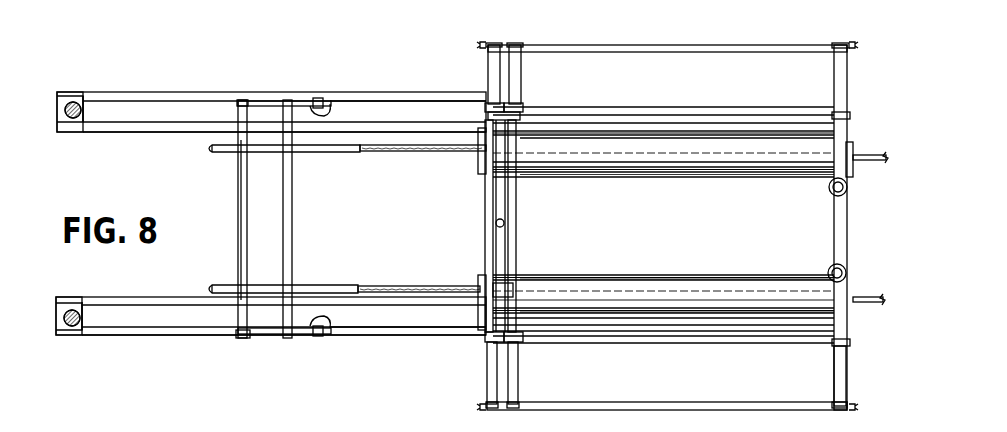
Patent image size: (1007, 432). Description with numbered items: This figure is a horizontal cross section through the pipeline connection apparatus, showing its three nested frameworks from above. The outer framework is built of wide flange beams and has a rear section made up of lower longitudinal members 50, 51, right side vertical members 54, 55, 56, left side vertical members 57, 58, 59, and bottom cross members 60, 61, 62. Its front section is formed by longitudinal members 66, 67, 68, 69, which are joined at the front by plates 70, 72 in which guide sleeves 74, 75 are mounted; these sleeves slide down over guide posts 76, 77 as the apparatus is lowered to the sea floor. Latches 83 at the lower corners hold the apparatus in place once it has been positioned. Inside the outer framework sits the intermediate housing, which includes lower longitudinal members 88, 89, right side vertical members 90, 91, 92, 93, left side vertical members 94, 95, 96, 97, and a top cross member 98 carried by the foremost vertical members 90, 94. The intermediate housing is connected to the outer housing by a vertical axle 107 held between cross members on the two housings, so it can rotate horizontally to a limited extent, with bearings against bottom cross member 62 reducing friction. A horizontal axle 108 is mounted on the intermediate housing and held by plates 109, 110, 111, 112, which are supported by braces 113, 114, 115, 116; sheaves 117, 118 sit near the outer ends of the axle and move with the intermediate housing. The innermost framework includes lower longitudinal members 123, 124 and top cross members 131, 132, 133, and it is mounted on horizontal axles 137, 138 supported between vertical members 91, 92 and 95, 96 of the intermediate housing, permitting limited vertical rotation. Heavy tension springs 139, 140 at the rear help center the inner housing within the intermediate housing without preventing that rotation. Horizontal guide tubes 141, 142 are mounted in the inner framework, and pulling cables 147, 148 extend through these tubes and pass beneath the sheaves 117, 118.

The lower longitudinal member 50 is at (698, 410).
The lower longitudinal member 51 is at (648, 45).
The right side vertical member 54 is at (496, 408).
The right side vertical member 55 is at (520, 408).
The right side vertical member 56 is at (834, 410).
The left side vertical member 57 is at (494, 43).
The left side vertical member 58 is at (520, 45).
The left side vertical member 59 is at (834, 48).
The bottom cross member 60 is at (488, 376).
The bottom cross member 61 is at (518, 375).
The bottom cross member 62 is at (847, 378).
The longitudinal member 66 is at (130, 92).
The longitudinal member 67 is at (150, 133).
The longitudinal member 68 is at (130, 297).
The longitudinal member 69 is at (118, 336).
The plate 70 is at (80, 336).
The plate 72 is at (80, 95).
The guide sleeve 74 is at (62, 319).
The guide sleeve 75 is at (64, 111).
The guide post 76 is at (70, 327).
The guide post 77 is at (76, 124).
The latch 83 is at (478, 44).
The lower longitudinal member 88 is at (620, 344).
The lower longitudinal member 89 is at (608, 109).
The right side vertical member 90 is at (241, 340).
The right side vertical member 91 is at (488, 342).
The right side vertical member 92 is at (522, 342).
The right side vertical member 93 is at (851, 343).
The left side vertical member 94 is at (243, 100).
The left side vertical member 95 is at (486, 106).
The left side vertical member 96 is at (522, 106).
The left side vertical member 97 is at (851, 116).
The top cross member 98 is at (238, 196).
The vertical axle 107 is at (504, 224).
The horizontal axle 108 is at (292, 204).
The plate 109 is at (306, 336).
The plate 110 is at (326, 326).
The plate 111 is at (330, 108).
The plate 112 is at (306, 100).
The brace 113 is at (434, 336).
The brace 114 is at (380, 100).
The brace 115 is at (316, 338).
The brace 116 is at (318, 98).
The sheave 117 is at (304, 285).
The sheave 118 is at (324, 153).
The lower longitudinal member 123 is at (722, 312).
The lower longitudinal member 124 is at (746, 136).
The top cross member 131 is at (485, 204).
The top cross member 132 is at (516, 204).
The top cross member 133 is at (846, 148).
The horizontal axle 137 is at (508, 300).
The horizontal axle 138 is at (506, 122).
The tension spring 139 is at (828, 272).
The tension spring 140 is at (829, 188).
The horizontal guide tube 141 is at (656, 277).
The horizontal guide tube 142 is at (668, 176).
The pulling cable 147 is at (400, 287).
The pulling cable 148 is at (428, 153).